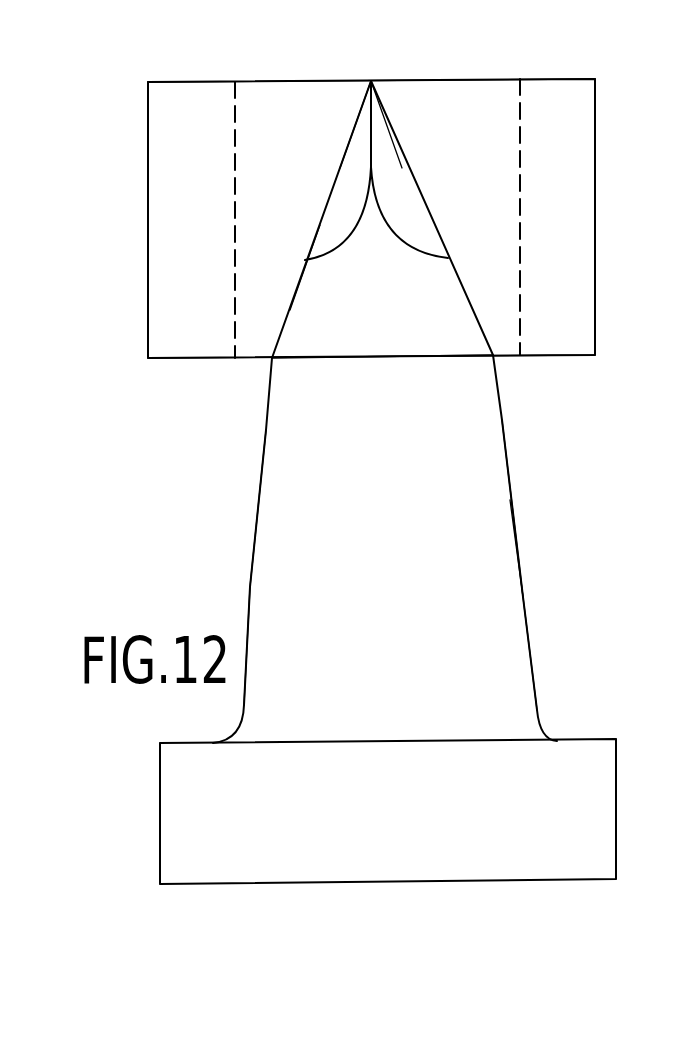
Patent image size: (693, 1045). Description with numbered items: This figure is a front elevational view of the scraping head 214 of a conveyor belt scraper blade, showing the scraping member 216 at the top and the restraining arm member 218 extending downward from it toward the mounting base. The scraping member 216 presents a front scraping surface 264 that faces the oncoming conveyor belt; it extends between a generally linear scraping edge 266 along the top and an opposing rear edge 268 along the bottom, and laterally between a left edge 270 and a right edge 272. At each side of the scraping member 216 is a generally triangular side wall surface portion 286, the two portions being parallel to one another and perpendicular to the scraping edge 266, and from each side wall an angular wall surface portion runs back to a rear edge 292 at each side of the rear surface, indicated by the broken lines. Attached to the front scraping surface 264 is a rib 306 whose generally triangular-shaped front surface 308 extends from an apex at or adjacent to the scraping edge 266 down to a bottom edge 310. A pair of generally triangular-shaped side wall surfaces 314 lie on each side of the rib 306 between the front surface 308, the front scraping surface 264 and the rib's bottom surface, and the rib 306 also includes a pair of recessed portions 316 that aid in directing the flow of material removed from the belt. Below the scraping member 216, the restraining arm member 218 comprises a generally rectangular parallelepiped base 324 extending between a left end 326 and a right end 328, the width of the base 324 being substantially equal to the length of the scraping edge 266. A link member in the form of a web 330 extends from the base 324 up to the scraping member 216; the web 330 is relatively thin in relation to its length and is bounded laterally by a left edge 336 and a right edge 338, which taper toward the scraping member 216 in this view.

The scraping head 214 is at (224, 538).
The scraping member 216 is at (600, 156).
The restraining arm member 218 is at (527, 534).
The front scraping surface 264 is at (575, 233).
The scraping edge 266 is at (437, 80).
The rear edge 268 is at (570, 357).
The left edge 270 is at (148, 226).
The right edge 272 is at (596, 186).
The triangular side wall surface portion 286 is at (148, 131).
The rear edge 292 is at (235, 192).
The rib 306 is at (438, 196).
The front surface 308 is at (320, 298).
The bottom edge 310 is at (353, 357).
The side wall surfaces 314 is at (439, 230).
The recessed portions 316 is at (396, 166).
The base 324 is at (590, 778).
The left end 326 is at (159, 814).
The right end 328 is at (617, 811).
The web 330 is at (490, 600).
The left edge 336 is at (260, 473).
The right edge 338 is at (508, 462).